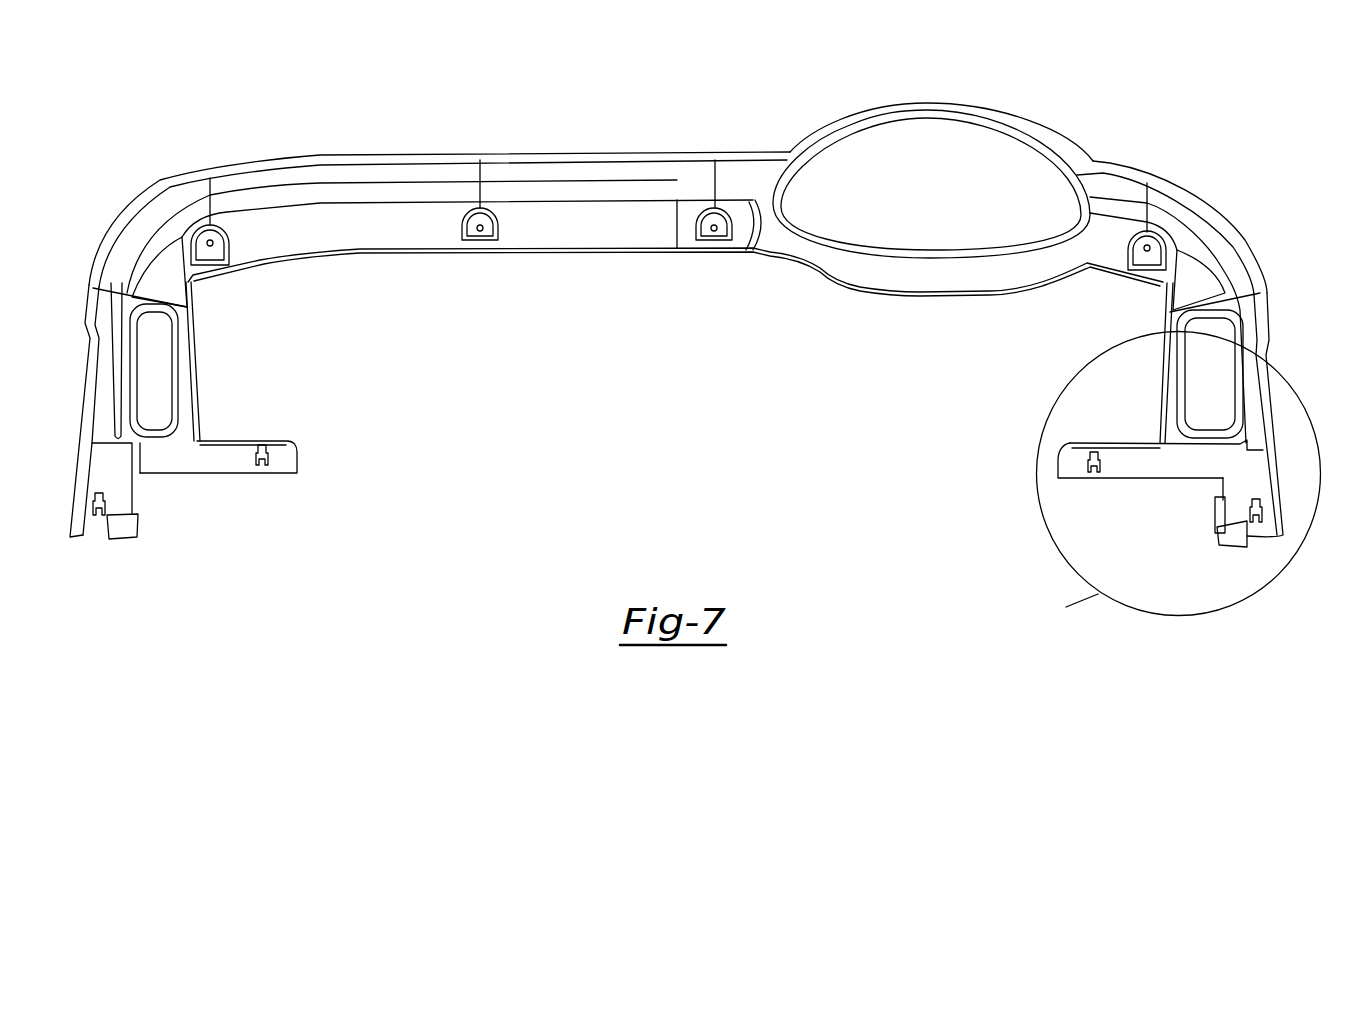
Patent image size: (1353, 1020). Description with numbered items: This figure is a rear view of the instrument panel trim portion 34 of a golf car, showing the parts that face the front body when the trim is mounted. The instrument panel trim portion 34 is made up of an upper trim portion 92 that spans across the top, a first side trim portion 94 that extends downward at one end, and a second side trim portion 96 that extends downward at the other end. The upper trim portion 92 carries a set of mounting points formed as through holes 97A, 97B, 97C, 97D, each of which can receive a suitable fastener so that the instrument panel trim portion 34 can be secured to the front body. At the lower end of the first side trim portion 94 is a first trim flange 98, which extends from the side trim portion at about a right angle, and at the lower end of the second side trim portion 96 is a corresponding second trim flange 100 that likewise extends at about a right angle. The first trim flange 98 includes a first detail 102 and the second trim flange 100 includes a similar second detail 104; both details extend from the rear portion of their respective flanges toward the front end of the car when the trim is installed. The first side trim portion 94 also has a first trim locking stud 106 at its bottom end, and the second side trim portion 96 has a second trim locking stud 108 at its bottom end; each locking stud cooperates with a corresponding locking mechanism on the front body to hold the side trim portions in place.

The instrument panel trim portion 34 is at (238, 122).
The upper trim portion 92 is at (402, 150).
The first side trim portion 94 is at (1270, 355).
The second side trim portion 96 is at (82, 387).
The through hole 97A is at (1145, 252).
The through hole 97B is at (713, 233).
The through hole 97C is at (477, 233).
The through hole 97D is at (215, 244).
The first trim flange 98 is at (1124, 443).
The second trim flange 100 is at (235, 440).
The first detail 102 is at (1100, 468).
The second detail 104 is at (257, 467).
The first trim locking stud 106 is at (1252, 507).
The second trim locking stud 108 is at (96, 515).